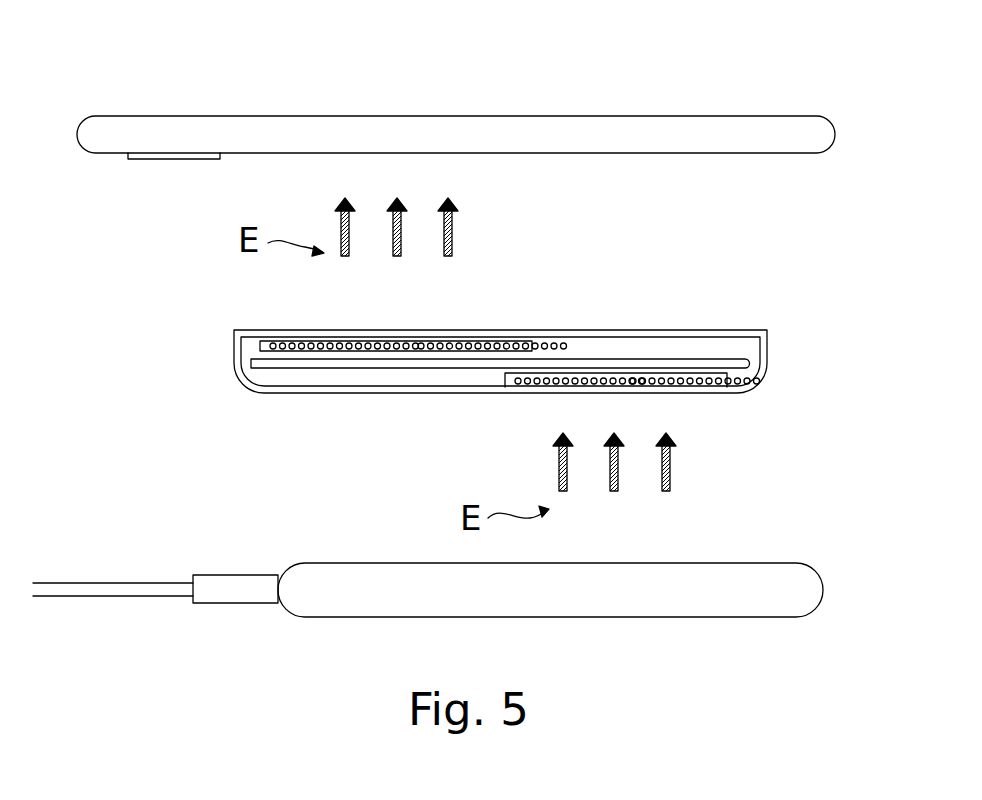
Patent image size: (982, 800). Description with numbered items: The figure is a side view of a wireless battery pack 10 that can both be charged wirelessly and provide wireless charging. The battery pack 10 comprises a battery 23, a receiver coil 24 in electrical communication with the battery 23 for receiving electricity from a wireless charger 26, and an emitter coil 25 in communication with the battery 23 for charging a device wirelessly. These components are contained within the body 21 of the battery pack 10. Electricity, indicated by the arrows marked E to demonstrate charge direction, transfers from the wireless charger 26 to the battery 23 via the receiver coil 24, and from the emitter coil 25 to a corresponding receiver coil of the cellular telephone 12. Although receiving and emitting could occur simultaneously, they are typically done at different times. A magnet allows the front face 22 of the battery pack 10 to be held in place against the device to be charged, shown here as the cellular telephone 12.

The battery pack 10 is at (422, 359).
The cellular telephone 12 is at (213, 137).
The body 21 is at (271, 392).
The front face 22 is at (600, 333).
The battery 23 is at (390, 370).
The receiver coil 24 is at (510, 393).
The emitter coil 25 is at (292, 340).
The wireless charger 26 is at (375, 617).